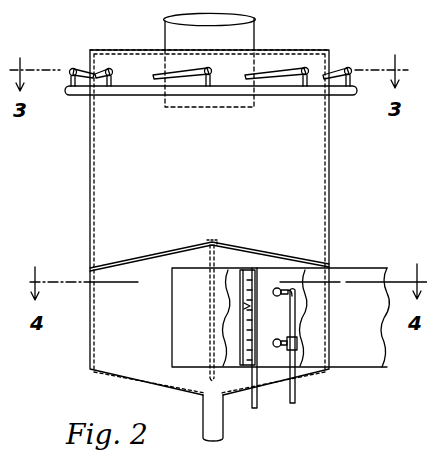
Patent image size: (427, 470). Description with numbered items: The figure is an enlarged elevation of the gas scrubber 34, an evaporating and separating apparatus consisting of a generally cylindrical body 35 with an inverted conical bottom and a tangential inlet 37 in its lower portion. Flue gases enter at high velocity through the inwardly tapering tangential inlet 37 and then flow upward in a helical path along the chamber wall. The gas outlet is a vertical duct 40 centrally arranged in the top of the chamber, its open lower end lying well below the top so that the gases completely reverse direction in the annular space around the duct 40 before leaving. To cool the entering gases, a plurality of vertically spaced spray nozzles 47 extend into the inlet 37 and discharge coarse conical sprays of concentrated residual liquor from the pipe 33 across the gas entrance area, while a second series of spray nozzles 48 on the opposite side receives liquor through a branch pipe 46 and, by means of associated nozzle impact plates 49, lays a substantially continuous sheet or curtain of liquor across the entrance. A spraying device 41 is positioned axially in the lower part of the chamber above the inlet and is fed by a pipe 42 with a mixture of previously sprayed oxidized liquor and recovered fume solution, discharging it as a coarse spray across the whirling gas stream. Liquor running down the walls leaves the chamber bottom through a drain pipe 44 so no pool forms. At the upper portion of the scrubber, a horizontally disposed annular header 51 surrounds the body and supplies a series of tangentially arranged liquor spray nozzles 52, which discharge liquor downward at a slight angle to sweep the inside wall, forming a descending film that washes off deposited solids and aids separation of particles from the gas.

The pipe 33 is at (297, 397).
The gas scrubber 34 is at (228, 169).
The cylindrical body 35 is at (330, 184).
The tangential inlet 37 is at (358, 275).
The vertical duct 40 is at (254, 107).
The spraying device 41 is at (216, 240).
The pipe 42 is at (215, 258).
The drain pipe 44 is at (224, 425).
The branch pipe 46 is at (258, 407).
The spray nozzles 47 is at (275, 296).
The spray nozzles 48 is at (245, 306).
The nozzle impact plates 49 is at (243, 333).
The annular header 51 is at (354, 95).
The liquor spray nozzles 52 is at (153, 76).